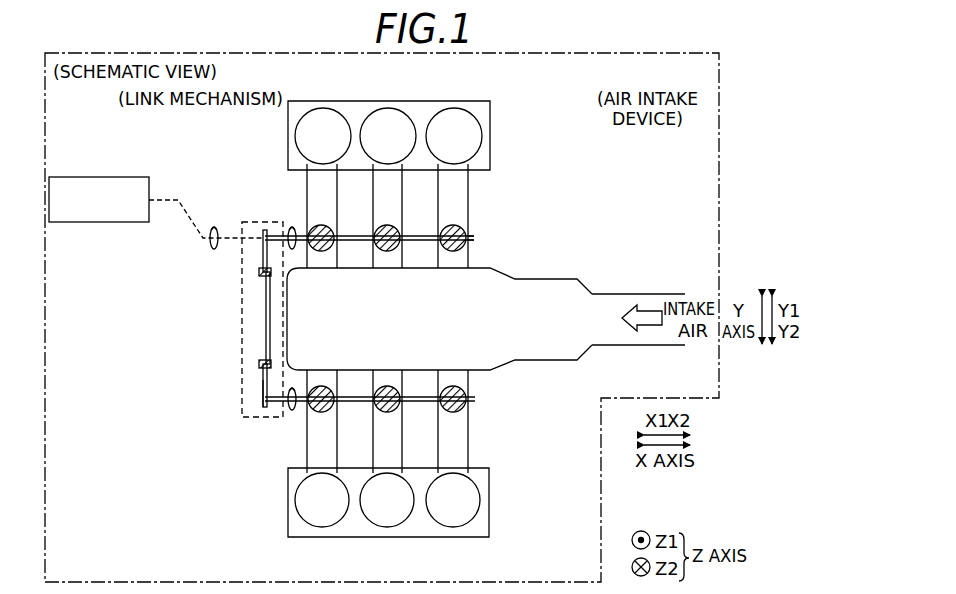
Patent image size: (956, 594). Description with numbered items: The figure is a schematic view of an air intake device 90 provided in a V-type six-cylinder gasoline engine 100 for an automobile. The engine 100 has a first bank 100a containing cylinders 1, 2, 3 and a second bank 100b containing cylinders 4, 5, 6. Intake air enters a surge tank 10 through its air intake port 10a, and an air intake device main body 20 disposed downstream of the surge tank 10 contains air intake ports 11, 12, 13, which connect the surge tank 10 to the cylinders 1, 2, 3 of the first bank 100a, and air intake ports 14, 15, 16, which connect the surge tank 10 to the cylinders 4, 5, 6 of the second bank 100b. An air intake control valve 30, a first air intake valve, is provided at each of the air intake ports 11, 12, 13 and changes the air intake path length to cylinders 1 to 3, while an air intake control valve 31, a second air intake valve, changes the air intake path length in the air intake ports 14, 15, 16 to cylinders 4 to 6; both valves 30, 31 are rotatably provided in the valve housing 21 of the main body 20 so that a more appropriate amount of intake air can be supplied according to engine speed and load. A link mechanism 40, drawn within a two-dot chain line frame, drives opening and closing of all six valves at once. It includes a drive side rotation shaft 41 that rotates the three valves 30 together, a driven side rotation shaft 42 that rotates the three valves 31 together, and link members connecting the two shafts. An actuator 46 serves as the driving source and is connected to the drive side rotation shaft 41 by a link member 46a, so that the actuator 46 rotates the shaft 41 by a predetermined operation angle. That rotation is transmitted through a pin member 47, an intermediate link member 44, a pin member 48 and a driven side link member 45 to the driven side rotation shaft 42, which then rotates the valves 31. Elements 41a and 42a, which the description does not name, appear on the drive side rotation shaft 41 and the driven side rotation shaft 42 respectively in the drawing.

The cylinder 1 is at (323, 112).
The cylinder 2 is at (389, 112).
The cylinder 3 is at (455, 112).
The cylinder 4 is at (321, 527).
The cylinder 5 is at (387, 527).
The cylinder 6 is at (453, 527).
The surge tank 10 is at (510, 270).
The air intake port 10a is at (607, 294).
The air intake port 11 is at (307, 177).
The air intake port 12 is at (397, 213).
The air intake port 13 is at (463, 193).
The air intake port 14 is at (310, 458).
The air intake port 15 is at (395, 418).
The air intake port 16 is at (462, 440).
The air intake device main body 20 is at (516, 232).
The valve housing 21 is at (468, 228).
The air intake control valve 30 is at (327, 250).
The air intake control valve 31 is at (330, 388).
The link mechanism 40 is at (248, 208).
The drive side rotation shaft 41 is at (262, 250).
The first lever 41a is at (270, 232).
The driven side rotation shaft 42 is at (355, 402).
The second lever 42a is at (270, 410).
The intermediate link member 44 is at (262, 322).
The driven side link member 45 is at (262, 390).
The actuator 46 is at (102, 177).
The link member 46a is at (163, 200).
The pin member 47 is at (258, 276).
The pin member 48 is at (256, 364).
The air intake device 90 is at (567, 147).
The V-type six-cylinder engine 100 is at (727, 120).
The first bank 100a is at (488, 112).
The second bank 100b is at (488, 525).